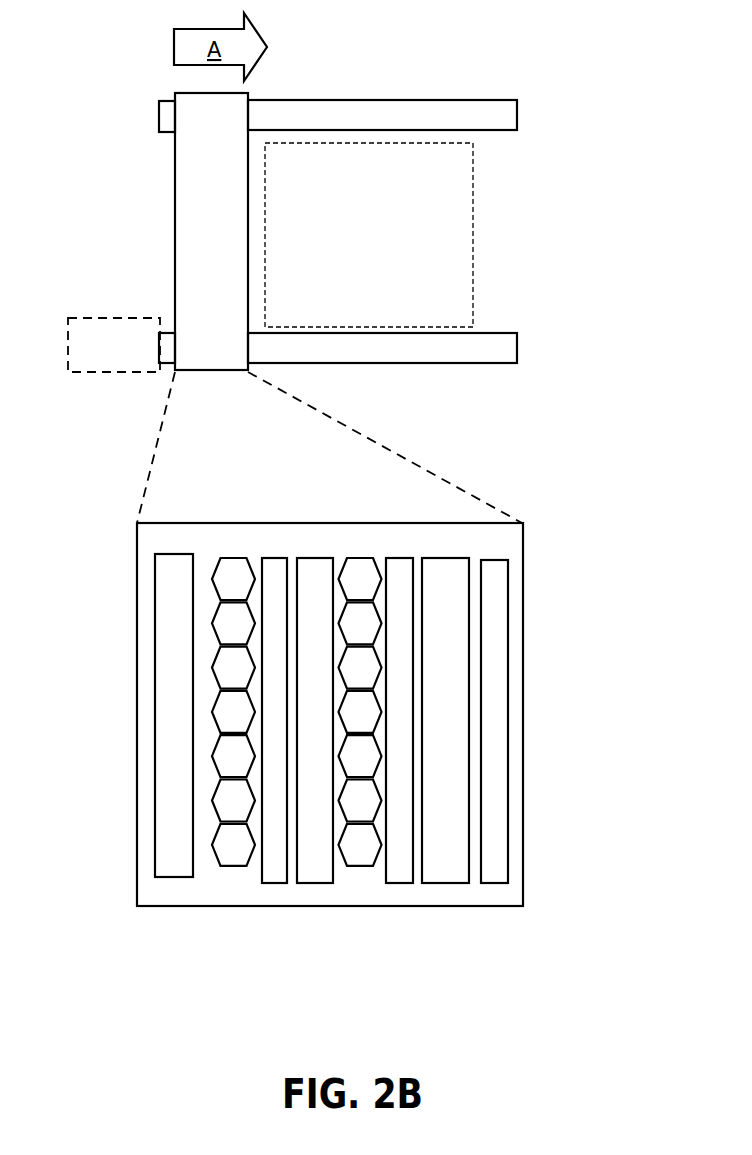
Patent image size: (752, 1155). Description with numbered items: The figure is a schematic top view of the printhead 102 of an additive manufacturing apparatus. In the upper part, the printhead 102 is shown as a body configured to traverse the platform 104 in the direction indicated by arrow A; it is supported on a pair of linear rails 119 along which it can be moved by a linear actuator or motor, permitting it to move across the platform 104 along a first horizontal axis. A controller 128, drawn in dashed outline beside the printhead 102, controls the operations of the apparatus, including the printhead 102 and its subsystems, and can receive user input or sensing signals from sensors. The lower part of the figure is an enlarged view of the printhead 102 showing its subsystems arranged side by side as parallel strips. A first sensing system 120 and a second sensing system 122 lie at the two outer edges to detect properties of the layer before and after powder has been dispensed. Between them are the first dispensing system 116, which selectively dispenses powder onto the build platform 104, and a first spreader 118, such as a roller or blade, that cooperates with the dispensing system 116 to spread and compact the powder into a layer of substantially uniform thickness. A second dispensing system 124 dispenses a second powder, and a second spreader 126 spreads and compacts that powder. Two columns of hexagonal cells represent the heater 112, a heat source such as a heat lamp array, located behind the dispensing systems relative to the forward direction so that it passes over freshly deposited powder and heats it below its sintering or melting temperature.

The printhead 102 is at (175, 243).
The platform 104 is at (369, 235).
The heater 112 is at (227, 548).
The first dispensing system 116 is at (445, 863).
The first spreader 118 is at (400, 865).
The linear rails 119 is at (375, 110).
The first sensing system 120 is at (175, 867).
The second sensing system 122 is at (496, 858).
The second dispensing system 124 is at (313, 855).
The second spreader 126 is at (268, 870).
The controller 128 is at (114, 345).